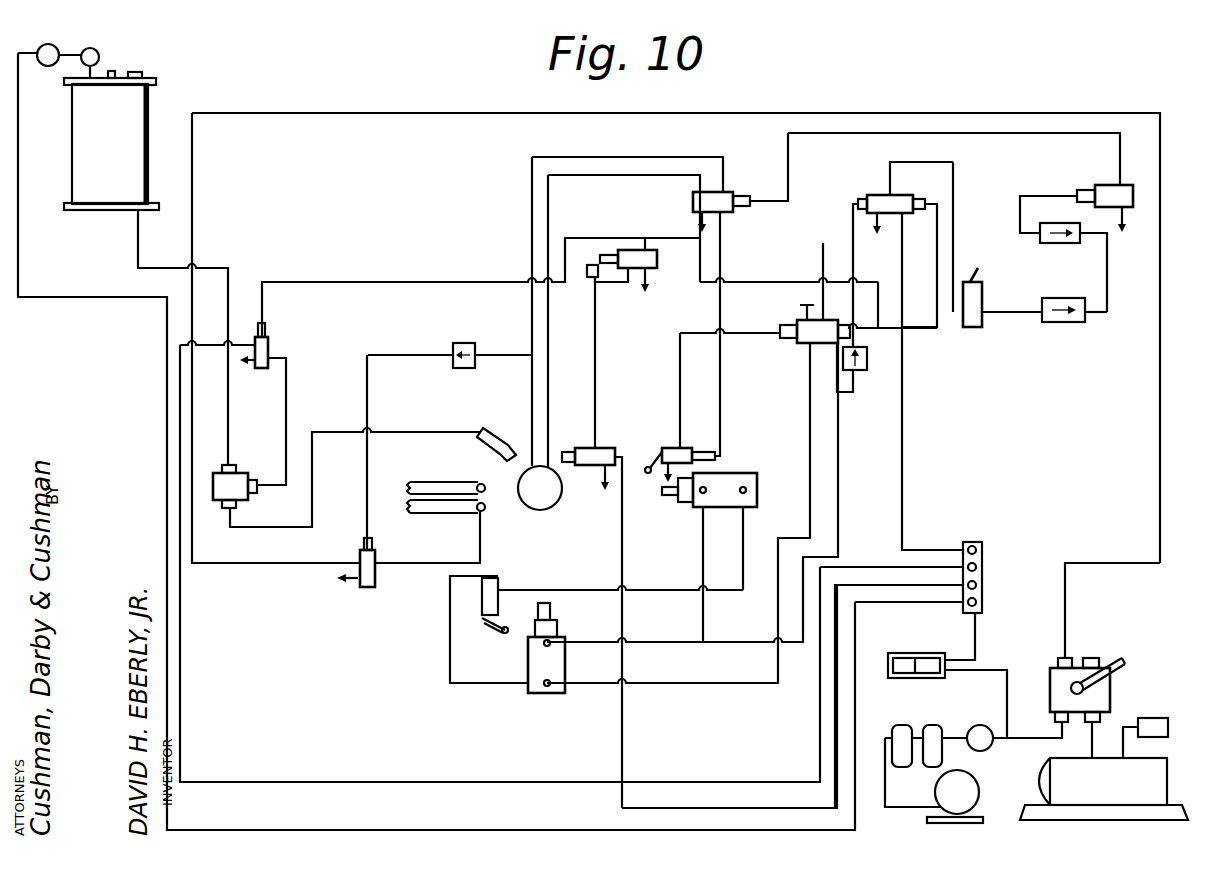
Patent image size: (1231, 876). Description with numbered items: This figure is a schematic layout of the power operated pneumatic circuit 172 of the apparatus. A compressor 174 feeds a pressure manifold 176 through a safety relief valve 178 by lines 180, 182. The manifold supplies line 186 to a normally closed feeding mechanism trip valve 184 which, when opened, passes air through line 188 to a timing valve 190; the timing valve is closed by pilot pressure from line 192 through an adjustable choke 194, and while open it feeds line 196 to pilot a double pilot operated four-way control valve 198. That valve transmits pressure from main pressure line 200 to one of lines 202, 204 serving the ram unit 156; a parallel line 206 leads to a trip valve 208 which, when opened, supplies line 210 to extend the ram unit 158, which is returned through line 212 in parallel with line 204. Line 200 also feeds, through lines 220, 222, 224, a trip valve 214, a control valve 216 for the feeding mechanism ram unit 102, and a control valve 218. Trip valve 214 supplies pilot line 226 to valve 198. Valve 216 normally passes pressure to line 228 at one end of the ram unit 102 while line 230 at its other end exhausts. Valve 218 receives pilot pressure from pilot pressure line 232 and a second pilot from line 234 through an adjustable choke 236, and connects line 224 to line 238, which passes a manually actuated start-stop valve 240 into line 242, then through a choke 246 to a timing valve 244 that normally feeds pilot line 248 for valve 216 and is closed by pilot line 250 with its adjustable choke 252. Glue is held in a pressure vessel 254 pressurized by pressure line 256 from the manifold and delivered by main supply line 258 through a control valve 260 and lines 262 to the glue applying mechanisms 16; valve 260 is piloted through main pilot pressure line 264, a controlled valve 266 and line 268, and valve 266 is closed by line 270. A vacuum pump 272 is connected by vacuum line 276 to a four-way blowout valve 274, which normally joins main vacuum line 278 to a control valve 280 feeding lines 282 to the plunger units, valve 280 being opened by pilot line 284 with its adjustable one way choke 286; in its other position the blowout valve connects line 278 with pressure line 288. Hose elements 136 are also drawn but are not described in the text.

The glue applying mechanism 16 is at (505, 428).
The feeding mechanism ram unit 102 is at (556, 506).
The hoses 136 is at (480, 484).
The ram unit 156 is at (533, 691).
The ram unit 158 is at (768, 470).
The pneumatic circuit 172 is at (976, 106).
The compressor 174 is at (970, 786).
The pressure manifold 176 is at (984, 576).
The safety relief valve 178 is at (926, 656).
The line 180 is at (1005, 701).
The line 182 is at (978, 646).
The feeding mechanism trip valve 184 is at (600, 446).
The line 186 is at (625, 743).
The line 188 is at (598, 345).
The timing valve 190 is at (667, 285).
The line 192 is at (600, 256).
The adjustable choke 194 is at (589, 279).
The line 196 is at (800, 281).
The double pilot pressure operated control valve 198 is at (805, 344).
The main pressure line 200 is at (904, 373).
The line 202 is at (812, 448).
The line 204 is at (840, 506).
The parallel line 206 is at (450, 641).
The trip valve 208 is at (500, 591).
The line 210 is at (675, 588).
The line 212 is at (701, 528).
The trip valve 214 is at (682, 447).
The control valve 216 is at (733, 213).
The control valve 218 is at (872, 194).
The line 220 is at (722, 361).
The line 222 is at (697, 236).
The line 224 is at (894, 266).
The line 226 is at (736, 333).
The line 228 is at (551, 187).
The line 230 is at (632, 156).
The pilot pressure line 232 is at (955, 249).
The line 234 is at (852, 236).
The adjustable choke 236 is at (885, 363).
The line 238 is at (955, 165).
The manually actuated start-stop valve 240 is at (984, 296).
The line 242 is at (1010, 316).
The timing valve 244 is at (1115, 185).
The choke 246 is at (1082, 324).
The pilot line 248 is at (790, 142).
The pilot line 250 is at (1031, 195).
The adjustable choke 252 is at (1056, 244).
The pressure vessel 254 is at (130, 142).
The pressure line 256 is at (21, 251).
The main supply line 258 is at (218, 266).
The control valve 260 is at (240, 466).
The lines 262 is at (260, 530).
The main pilot pressure line 264 is at (181, 660).
The controlled valve 266 is at (270, 351).
The line 268 is at (288, 400).
The line 270 is at (368, 282).
The vacuum pump 272 is at (1150, 786).
The four-way blowout valve 274 is at (1112, 697).
The vacuum line 276 is at (1124, 720).
The main vacuum line 278 is at (1133, 564).
The control valve 280 is at (377, 578).
The lines 282 is at (452, 562).
The line 284 is at (369, 403).
The adjustable one way choke 286 is at (465, 343).
The pressure line 288 is at (1058, 739).